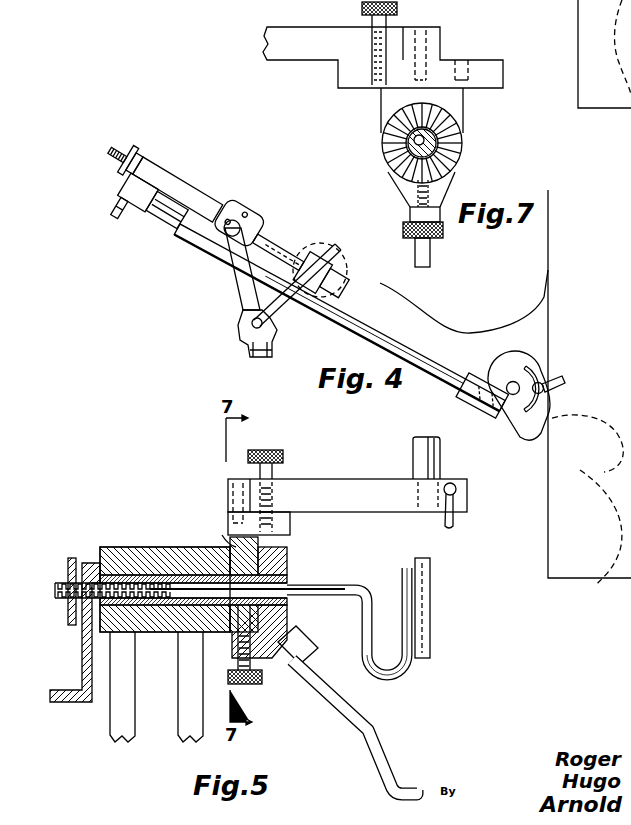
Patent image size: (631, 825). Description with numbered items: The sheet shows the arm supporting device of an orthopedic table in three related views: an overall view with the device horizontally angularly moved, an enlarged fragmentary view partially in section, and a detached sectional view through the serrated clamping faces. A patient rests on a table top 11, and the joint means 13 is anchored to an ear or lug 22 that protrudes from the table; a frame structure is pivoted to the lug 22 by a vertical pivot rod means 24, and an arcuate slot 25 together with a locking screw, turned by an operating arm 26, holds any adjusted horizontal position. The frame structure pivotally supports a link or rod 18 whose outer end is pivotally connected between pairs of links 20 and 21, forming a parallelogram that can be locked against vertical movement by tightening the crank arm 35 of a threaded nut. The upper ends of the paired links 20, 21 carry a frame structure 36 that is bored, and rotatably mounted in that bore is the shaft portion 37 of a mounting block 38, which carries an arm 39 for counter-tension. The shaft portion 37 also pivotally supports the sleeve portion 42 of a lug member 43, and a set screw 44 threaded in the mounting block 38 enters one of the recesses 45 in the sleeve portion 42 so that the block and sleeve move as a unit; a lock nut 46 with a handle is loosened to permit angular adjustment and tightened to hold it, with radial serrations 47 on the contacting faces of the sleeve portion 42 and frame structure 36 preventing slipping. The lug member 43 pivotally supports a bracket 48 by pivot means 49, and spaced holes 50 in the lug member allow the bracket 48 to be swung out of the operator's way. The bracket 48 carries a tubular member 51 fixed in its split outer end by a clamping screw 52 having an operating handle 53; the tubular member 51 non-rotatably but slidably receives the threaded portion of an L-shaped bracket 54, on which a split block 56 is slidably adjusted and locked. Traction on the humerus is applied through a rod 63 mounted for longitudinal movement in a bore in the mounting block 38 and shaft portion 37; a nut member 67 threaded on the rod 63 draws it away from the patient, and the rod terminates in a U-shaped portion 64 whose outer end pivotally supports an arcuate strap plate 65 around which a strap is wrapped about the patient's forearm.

In FIG. 4, the table top 11 is at (580, 10).
In FIG. 4, the joint means 13 is at (498, 424).
In FIG. 4, the link or rod 18 is at (408, 355).
In FIG. 4, the link or rod 20 is at (137, 190).
In FIG. 5, the link or rod 20 is at (112, 724).
In FIG. 4, the link or rod 21 is at (176, 217).
In FIG. 5, the link or rod 21 is at (180, 724).
In FIG. 4, the ear or lug 22 is at (541, 356).
In FIG. 4, the vertical pivot rod means 24 is at (513, 382).
In FIG. 4, the arcuate slot 25 is at (543, 371).
In FIG. 4, the operating arm 26 is at (566, 381).
In FIG. 4, the crank arm 35 is at (113, 223).
In FIG. 4, the frame structure 36 is at (193, 186).
In FIG. 5, the frame structure 36 is at (128, 547).
In FIG. 7, the shaft portion 37 is at (408, 144).
In FIG. 5, the shaft portion 37 is at (159, 572).
In FIG. 7, the mounting block 38 is at (410, 214).
In FIG. 5, the mounting block 38 is at (288, 566).
In FIG. 7, the arm 39 is at (432, 262).
In FIG. 4, the arm 39 is at (348, 288).
In FIG. 5, the arm 39 is at (370, 732).
In FIG. 5, the sleeve portion 42 is at (280, 541).
In FIG. 4, the lug member 43 is at (252, 222).
In FIG. 5, the lug member 43 is at (290, 527).
In FIG. 7, the set screw 44 is at (445, 232).
In FIG. 5, the set screw 44 is at (250, 684).
In FIG. 7, the recesses 45 is at (458, 152).
In FIG. 5, the recesses 45 is at (238, 636).
In FIG. 4, the lock nut 46 is at (146, 163).
In FIG. 5, the lock nut 46 is at (92, 562).
In FIG. 7, the radial serrations 47 is at (452, 140).
In FIG. 5, the radial serrations 47 is at (230, 545).
In FIG. 7, the bracket 48 is at (318, 54).
In FIG. 4, the bracket 48 is at (244, 284).
In FIG. 5, the bracket 48 is at (334, 485).
In FIG. 7, the pivot means 49 is at (430, 34).
In FIG. 5, the pivot means 49 is at (232, 496).
In FIG. 4, the holes 50 is at (250, 213).
In FIG. 5, the tubular member 51 is at (441, 463).
In FIG. 5, the clamping screw 52 is at (457, 490).
In FIG. 5, the operating handle 53 is at (456, 518).
In FIG. 4, the L-shaped bracket 54 is at (278, 310).
In FIG. 4, the split block 56 is at (338, 268).
In FIG. 7, the rod 63 is at (455, 119).
In FIG. 4, the rod 63 is at (113, 154).
In FIG. 5, the rod 63 is at (54, 591).
In FIG. 4, the U-shaped portion 64 is at (278, 252).
In FIG. 5, the U-shaped portion 64 is at (392, 670).
In FIG. 5, the arcuate strap plate 65 is at (430, 598).
In FIG. 4, the nut member 67 is at (142, 141).
In FIG. 5, the nut member 67 is at (67, 561).